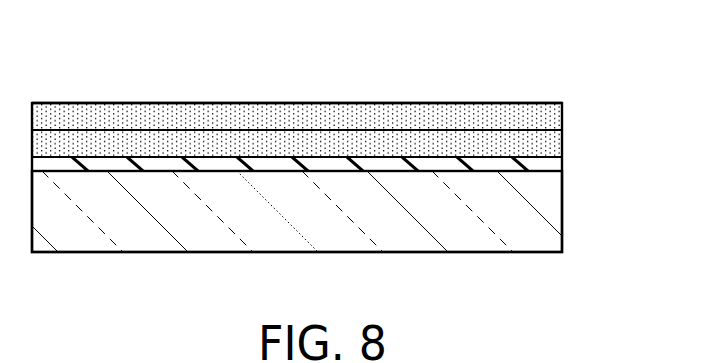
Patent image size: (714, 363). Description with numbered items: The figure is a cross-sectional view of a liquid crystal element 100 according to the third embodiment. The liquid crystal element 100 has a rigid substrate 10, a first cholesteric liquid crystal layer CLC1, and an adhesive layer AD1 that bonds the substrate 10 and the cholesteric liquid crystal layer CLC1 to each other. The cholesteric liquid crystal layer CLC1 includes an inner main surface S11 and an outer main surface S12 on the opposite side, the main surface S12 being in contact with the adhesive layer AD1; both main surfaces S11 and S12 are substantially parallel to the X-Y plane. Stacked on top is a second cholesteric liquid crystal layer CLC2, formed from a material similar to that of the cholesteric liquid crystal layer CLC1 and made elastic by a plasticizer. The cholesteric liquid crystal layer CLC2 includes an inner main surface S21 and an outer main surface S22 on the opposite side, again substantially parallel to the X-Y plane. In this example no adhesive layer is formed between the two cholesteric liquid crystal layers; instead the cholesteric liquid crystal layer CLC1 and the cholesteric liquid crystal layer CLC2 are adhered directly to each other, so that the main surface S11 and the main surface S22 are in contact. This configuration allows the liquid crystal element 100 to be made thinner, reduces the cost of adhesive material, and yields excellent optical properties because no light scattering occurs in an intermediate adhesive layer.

The liquid crystal element 100 is at (321, 160).
The substrate 10 is at (563, 207).
The adhesive layer AD1 is at (563, 167).
The first cholesteric liquid crystal layer CLC1 is at (337, 177).
The cholesteric liquid crystal layer CLC2 is at (337, 177).
The main surface (inner surface) S11 is at (300, 128).
The main surface (outer surface) S12 is at (318, 157).
The main surface (inner surface) S21 is at (162, 103).
The main surface (outer surface) S22 is at (174, 130).